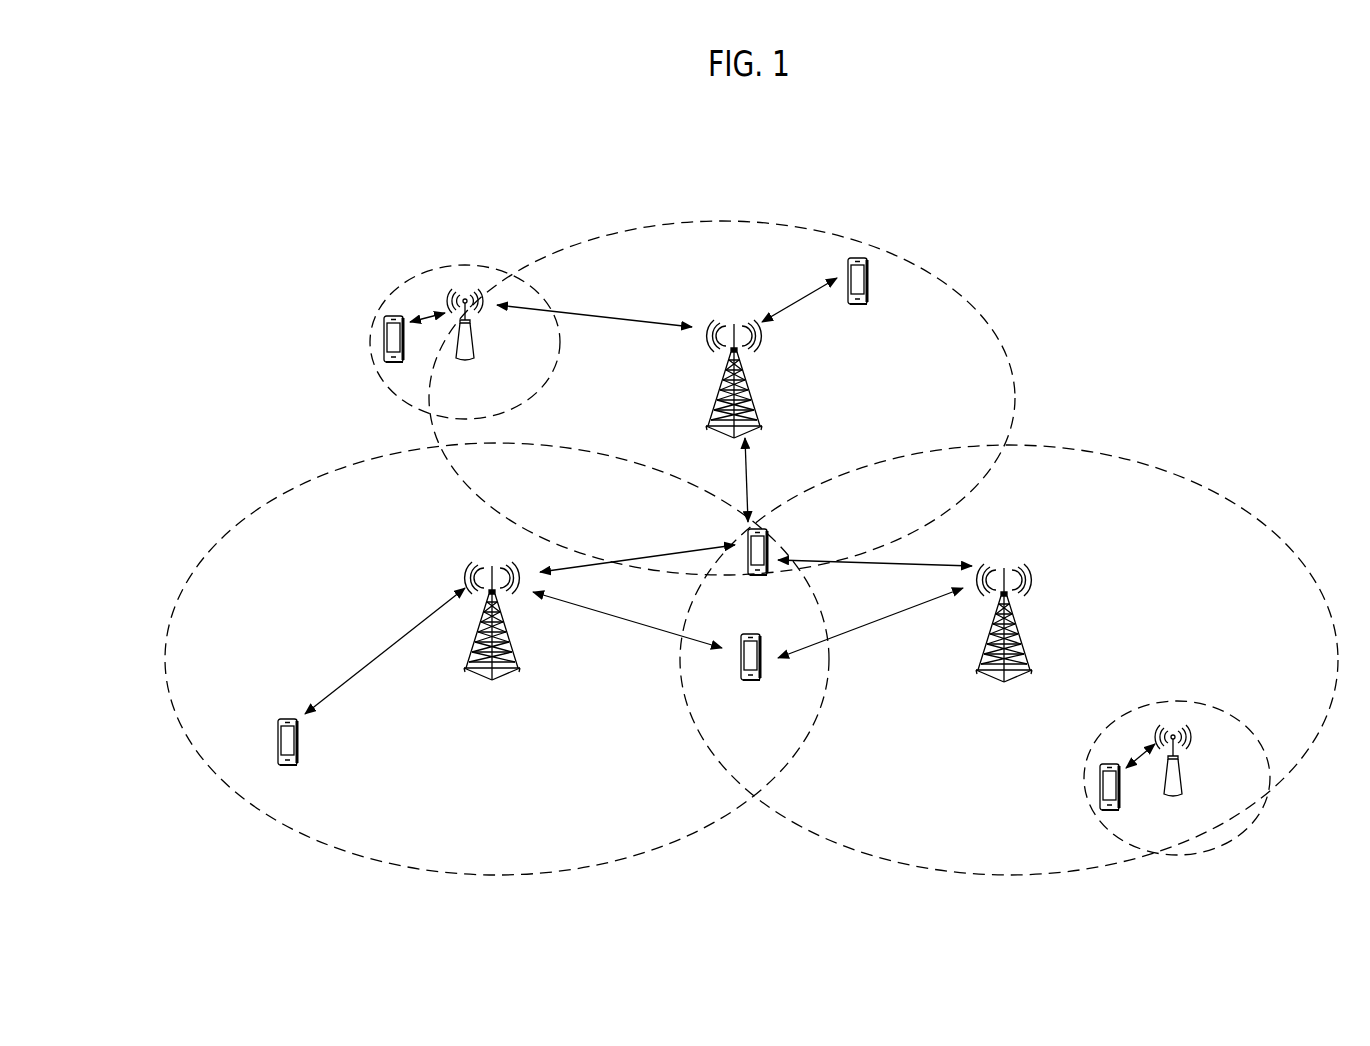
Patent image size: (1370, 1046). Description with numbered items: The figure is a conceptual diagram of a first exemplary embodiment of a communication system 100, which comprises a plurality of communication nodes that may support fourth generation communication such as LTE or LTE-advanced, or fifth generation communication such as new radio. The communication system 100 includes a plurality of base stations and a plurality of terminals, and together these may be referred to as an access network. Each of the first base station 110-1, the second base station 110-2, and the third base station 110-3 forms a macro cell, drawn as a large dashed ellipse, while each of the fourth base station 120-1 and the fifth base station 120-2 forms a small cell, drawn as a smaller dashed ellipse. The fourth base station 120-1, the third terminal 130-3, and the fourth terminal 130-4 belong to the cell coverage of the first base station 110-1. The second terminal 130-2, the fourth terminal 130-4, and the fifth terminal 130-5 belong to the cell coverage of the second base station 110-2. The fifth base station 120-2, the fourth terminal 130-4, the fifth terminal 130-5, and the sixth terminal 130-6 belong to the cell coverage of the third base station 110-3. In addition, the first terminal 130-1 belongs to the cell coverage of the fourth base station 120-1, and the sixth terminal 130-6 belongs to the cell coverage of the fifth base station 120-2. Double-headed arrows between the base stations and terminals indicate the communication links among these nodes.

The communication system 100 is at (739, 187).
The first base station 110-1 is at (748, 383).
The second base station 110-2 is at (492, 675).
The third base station 110-3 is at (1014, 624).
The fourth base station 120-1 is at (474, 340).
The fifth base station 120-2 is at (1184, 768).
The first terminal 130-1 is at (383, 336).
The second terminal 130-2 is at (300, 742).
The third terminal 130-3 is at (870, 288).
The fourth terminal 130-4 is at (770, 528).
The fifth terminal 130-5 is at (752, 633).
The sixth terminal 130-6 is at (1098, 784).